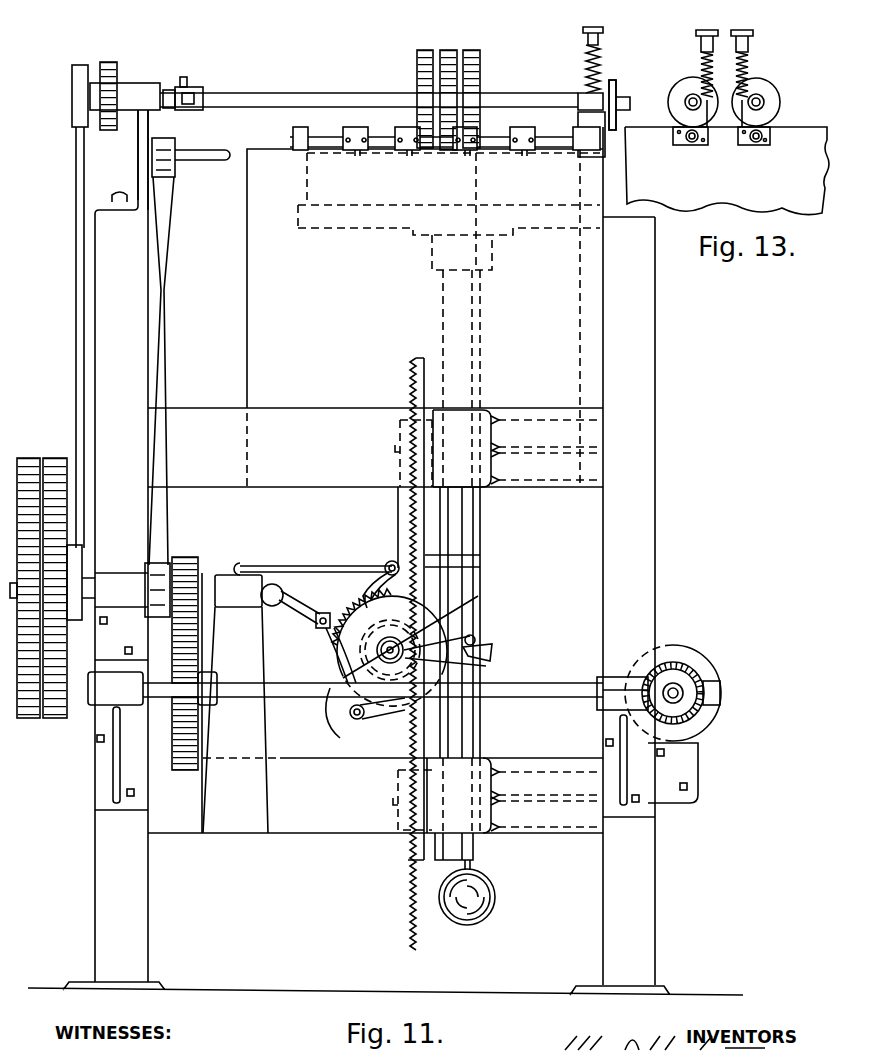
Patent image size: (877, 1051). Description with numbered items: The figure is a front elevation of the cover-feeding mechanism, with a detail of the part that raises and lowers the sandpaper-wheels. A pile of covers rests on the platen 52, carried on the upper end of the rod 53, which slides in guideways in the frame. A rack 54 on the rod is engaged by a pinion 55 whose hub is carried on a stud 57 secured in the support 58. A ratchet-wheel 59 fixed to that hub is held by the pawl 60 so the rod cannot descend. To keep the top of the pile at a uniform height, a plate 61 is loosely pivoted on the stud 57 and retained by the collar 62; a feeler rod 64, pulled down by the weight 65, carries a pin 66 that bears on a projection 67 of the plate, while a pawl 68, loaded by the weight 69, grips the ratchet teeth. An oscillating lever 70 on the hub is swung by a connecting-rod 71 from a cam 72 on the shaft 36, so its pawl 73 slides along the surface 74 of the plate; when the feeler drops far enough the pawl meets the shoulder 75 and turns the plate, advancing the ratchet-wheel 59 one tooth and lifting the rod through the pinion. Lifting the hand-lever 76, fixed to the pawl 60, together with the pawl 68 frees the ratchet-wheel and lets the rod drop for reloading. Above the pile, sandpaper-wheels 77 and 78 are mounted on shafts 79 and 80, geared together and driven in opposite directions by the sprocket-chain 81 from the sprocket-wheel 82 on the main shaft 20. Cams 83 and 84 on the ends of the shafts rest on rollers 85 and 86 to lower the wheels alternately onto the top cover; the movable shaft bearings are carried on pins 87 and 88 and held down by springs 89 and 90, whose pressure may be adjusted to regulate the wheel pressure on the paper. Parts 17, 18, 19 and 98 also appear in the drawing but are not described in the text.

In FIG. 11, the bearing hub 17 is at (146, 683).
In FIG. 11, the gear 18 is at (172, 724).
In FIG. 11, the gear 19 is at (200, 585).
In FIG. 11, the main shaft 20 is at (218, 577).
In FIG. 11, the shaft 36 is at (687, 717).
In FIG. 11, the platen 52 is at (328, 216).
In FIG. 11, the rod 53 is at (443, 312).
In FIG. 11, the rack 54 is at (412, 382).
In FIG. 11, the pinion 55 is at (380, 650).
In FIG. 11, the stud 57 is at (480, 667).
In FIG. 11, the support 58 is at (397, 545).
In FIG. 11, the ratchet-wheel 59 is at (355, 608).
In FIG. 11, the pawl 60 is at (368, 586).
In FIG. 11, the plate 61 is at (422, 632).
In FIG. 11, the collar 62 is at (335, 684).
In FIG. 11, the rod 64 is at (480, 359).
In FIG. 11, the weight 65 is at (484, 894).
In FIG. 11, the pin 66 is at (477, 638).
In FIG. 11, the projection 67 is at (482, 652).
In FIG. 11, the pawl 68 is at (321, 631).
In FIG. 11, the weight 69 is at (284, 593).
In FIG. 11, the oscillating lever 70 is at (385, 659).
In FIG. 11, the connecting-rod 71 is at (503, 699).
In FIG. 11, the cam 72 is at (679, 654).
In FIG. 11, the pawl 73 is at (404, 716).
In FIG. 11, the surface 74 is at (350, 708).
In FIG. 11, the shoulder 75 is at (471, 627).
In FIG. 11, the hand-lever 76 is at (287, 570).
In FIG. 11, the sandpaper-wheel 77 is at (446, 52).
In FIG. 11, the sandpaper-wheel 78 is at (423, 52).
In FIG. 11, the shaft 79 is at (310, 96).
In FIG. 13, the shaft 79 is at (685, 104).
In FIG. 13, the shaft 80 is at (768, 106).
In FIG. 11, the sprocket-chain 81 is at (76, 280).
In FIG. 11, the sprocket-wheel 82 is at (88, 575).
In FIG. 11, the cam 83 is at (617, 86).
In FIG. 13, the cam 83 is at (687, 87).
In FIG. 13, the cam 84 is at (771, 88).
In FIG. 13, the roller 85 is at (693, 145).
In FIG. 13, the roller 86 is at (762, 143).
In FIG. 13, the pin 87 is at (707, 29).
In FIG. 13, the pin 88 is at (742, 29).
In FIG. 13, the spring 89 is at (702, 58).
In FIG. 13, the spring 90 is at (753, 66).
In FIG. 11, the belt 98 is at (165, 319).